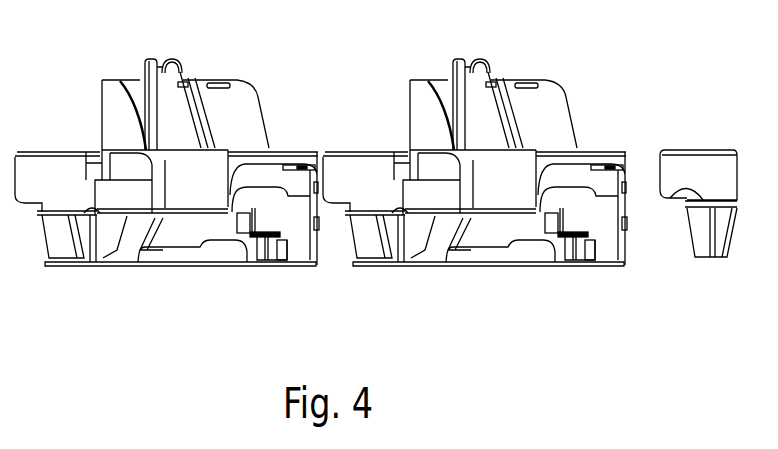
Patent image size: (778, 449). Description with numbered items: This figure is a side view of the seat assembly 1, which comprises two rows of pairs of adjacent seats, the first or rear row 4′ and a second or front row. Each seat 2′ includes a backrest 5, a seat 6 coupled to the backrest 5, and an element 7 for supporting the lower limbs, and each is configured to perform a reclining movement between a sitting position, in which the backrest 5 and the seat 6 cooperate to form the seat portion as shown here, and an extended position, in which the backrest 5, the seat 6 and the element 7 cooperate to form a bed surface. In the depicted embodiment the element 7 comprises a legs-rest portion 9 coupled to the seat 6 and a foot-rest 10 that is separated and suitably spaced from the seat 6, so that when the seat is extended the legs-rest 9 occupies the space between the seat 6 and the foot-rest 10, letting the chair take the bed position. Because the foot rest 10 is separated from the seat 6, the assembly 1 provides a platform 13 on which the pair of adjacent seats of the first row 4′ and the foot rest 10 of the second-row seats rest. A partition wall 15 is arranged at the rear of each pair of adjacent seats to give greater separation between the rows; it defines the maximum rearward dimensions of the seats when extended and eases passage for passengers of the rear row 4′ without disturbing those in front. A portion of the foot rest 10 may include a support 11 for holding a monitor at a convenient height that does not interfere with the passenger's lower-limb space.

The assembly 1 is at (318, 34).
The seat 2′ is at (237, 255).
The first row 4′ is at (167, 296).
The backrest 5 is at (145, 80).
The seat 6 is at (245, 193).
The element for supporting the lower limbs 7 is at (306, 266).
The legs-rest portion 9 is at (273, 222).
The foot-rest element 10 is at (392, 212).
The support 11 is at (40, 178).
The platform 13 is at (98, 262).
The partition wall 15 is at (108, 97).